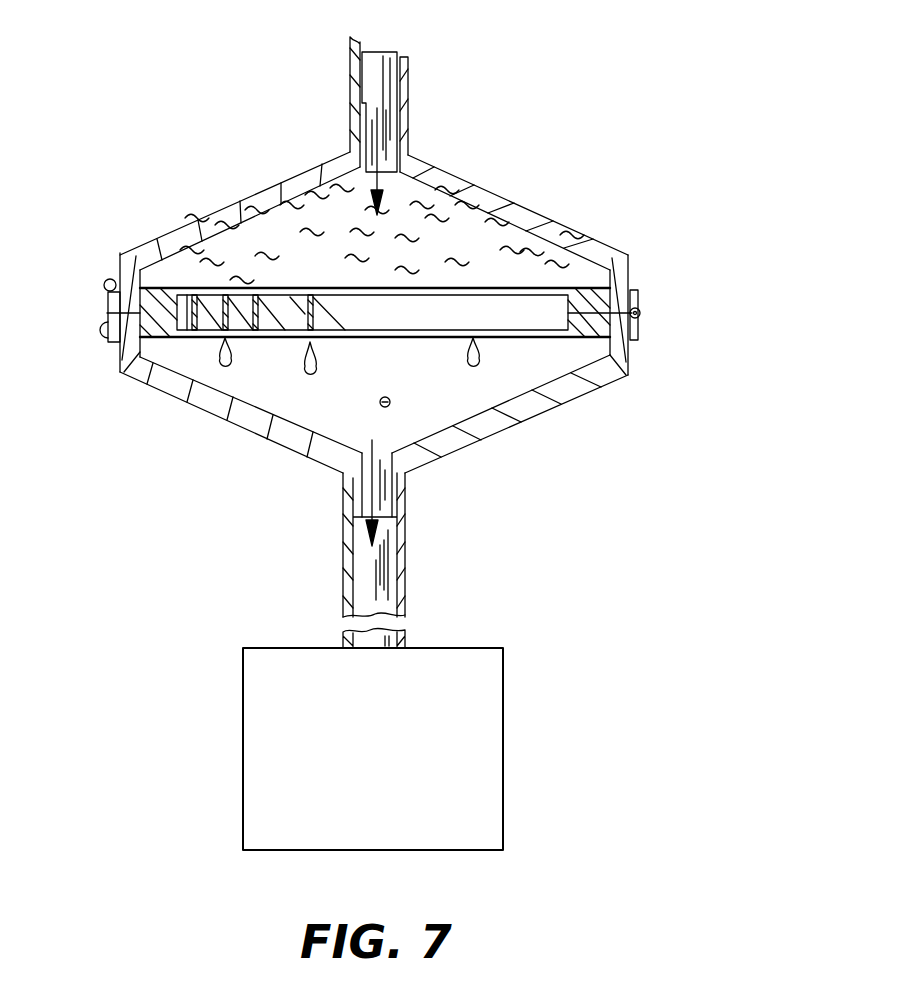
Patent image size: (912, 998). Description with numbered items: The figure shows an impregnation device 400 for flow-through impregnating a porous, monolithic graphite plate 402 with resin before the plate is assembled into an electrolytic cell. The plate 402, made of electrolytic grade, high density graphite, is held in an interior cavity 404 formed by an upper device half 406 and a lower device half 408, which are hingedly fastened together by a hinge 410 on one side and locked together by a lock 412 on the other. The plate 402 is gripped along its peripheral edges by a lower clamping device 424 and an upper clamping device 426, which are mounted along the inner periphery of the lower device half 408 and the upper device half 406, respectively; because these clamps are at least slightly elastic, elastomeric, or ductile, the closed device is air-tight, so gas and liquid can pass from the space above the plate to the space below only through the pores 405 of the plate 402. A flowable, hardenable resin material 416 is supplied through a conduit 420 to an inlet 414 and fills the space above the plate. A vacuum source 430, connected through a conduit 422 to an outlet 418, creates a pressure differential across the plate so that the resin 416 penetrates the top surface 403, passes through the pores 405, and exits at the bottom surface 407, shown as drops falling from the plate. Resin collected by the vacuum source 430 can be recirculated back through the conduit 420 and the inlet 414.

The impregnation device 400 is at (548, 167).
The porous, monolithic graphite plate 402 is at (495, 303).
The top surface 403 is at (570, 290).
The interior cavity 404 is at (240, 232).
The pores 405 is at (315, 293).
The upper device half 406 is at (463, 173).
The bottom surface 407 is at (503, 333).
The lower device half 408 is at (553, 407).
The hinge 410 is at (640, 296).
The lock 412 is at (102, 307).
The inlet 414 is at (407, 172).
The flowable, hardenable resin material 416 is at (317, 358).
The outlet 418 is at (378, 440).
The conduit 420 is at (350, 72).
The conduit 422 is at (407, 565).
The lower clamping device 424 is at (593, 362).
The upper clamping device 426 is at (165, 290).
The vacuum source 430 is at (503, 683).